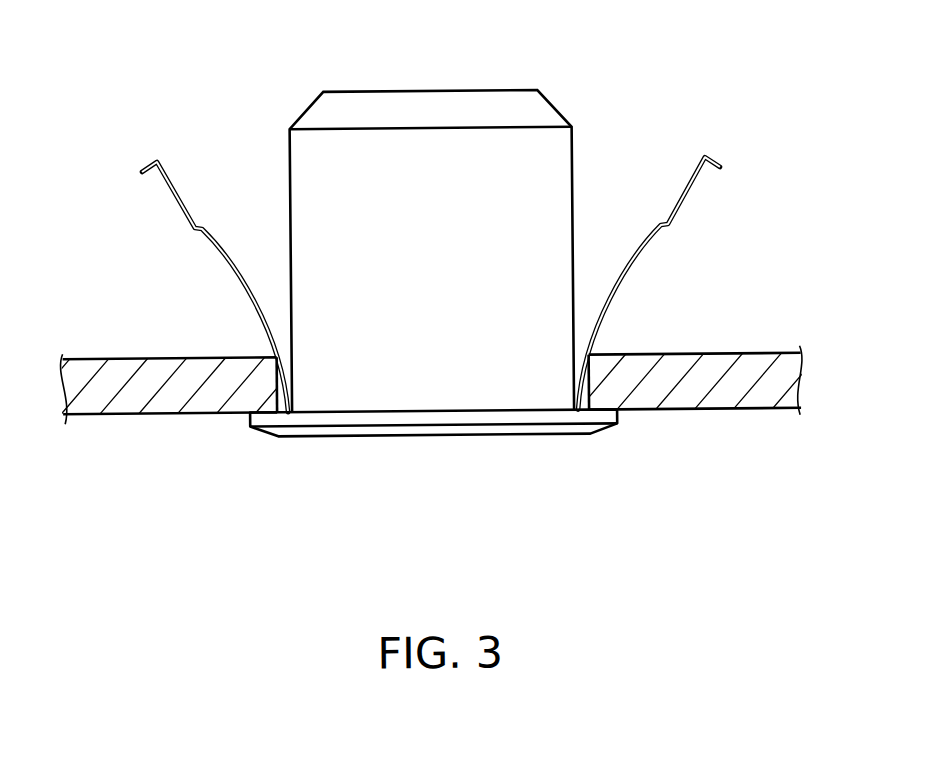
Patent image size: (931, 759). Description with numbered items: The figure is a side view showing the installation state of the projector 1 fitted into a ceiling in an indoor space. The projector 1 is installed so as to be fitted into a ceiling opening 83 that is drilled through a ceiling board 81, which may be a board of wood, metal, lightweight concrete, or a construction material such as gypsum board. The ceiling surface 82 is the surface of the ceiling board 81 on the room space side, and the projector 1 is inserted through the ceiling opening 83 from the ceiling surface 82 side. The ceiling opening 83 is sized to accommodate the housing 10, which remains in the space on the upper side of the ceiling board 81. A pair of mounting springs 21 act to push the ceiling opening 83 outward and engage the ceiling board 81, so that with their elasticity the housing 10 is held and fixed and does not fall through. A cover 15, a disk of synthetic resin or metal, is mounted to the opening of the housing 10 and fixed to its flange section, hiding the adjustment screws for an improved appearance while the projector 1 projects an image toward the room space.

The projector 1 is at (432, 275).
The housing 10 is at (456, 105).
The cover 15 is at (328, 434).
The mounting spring 21 is at (188, 205).
The ceiling board 81 is at (421, 378).
The ceiling surface 82 is at (142, 412).
The ceiling opening 83 is at (611, 340).